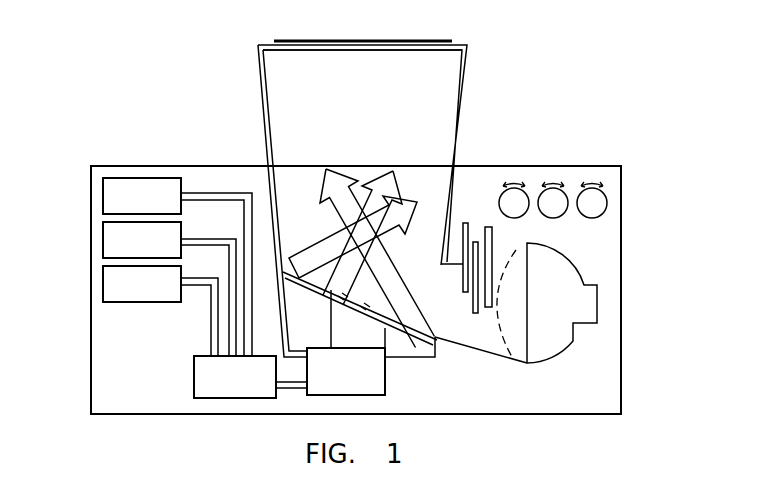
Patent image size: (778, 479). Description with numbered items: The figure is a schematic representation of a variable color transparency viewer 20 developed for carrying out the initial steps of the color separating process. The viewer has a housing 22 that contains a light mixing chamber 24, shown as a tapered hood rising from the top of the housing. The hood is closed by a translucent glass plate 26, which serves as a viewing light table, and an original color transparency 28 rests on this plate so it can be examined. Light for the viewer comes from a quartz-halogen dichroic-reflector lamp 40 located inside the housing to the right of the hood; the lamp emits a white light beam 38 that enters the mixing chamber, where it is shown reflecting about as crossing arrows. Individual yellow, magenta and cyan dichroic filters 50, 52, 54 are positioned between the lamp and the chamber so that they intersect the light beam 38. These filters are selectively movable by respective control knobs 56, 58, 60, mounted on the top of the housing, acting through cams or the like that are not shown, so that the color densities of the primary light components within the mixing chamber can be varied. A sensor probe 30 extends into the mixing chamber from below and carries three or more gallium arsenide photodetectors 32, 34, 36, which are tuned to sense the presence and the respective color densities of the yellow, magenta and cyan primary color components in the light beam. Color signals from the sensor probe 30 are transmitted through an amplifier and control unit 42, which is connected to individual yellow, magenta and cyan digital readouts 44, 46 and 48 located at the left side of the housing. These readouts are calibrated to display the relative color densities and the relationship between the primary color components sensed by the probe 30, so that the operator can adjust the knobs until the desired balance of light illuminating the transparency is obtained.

The variable color transparency viewer 20 is at (626, 172).
The housing 22 is at (621, 282).
The light mixing chamber 24 is at (440, 120).
The translucent glass plate 26 is at (372, 47).
The original color transparency 28 is at (407, 40).
The sensor probe 30 is at (387, 390).
The gallium arsenide photodetector 32 is at (380, 320).
The gallium arsenide photodetector 34 is at (368, 310).
The gallium arsenide photodetector 36 is at (356, 320).
The white light beam 38 is at (487, 348).
The quartz-halogen dichroic-reflector lamp 40 is at (551, 352).
The amplifier and control unit 42 is at (194, 380).
The yellow digital readout 44 is at (103, 194).
The magenta digital readout 46 is at (103, 241).
The cyan digital readout 48 is at (103, 288).
The yellow dichroic filter 50 is at (475, 313).
The magenta dichroic filter 52 is at (463, 292).
The cyan dichroic filter 54 is at (488, 227).
The control knob 56 is at (528, 196).
The control knob 58 is at (567, 198).
The control knob 60 is at (605, 200).